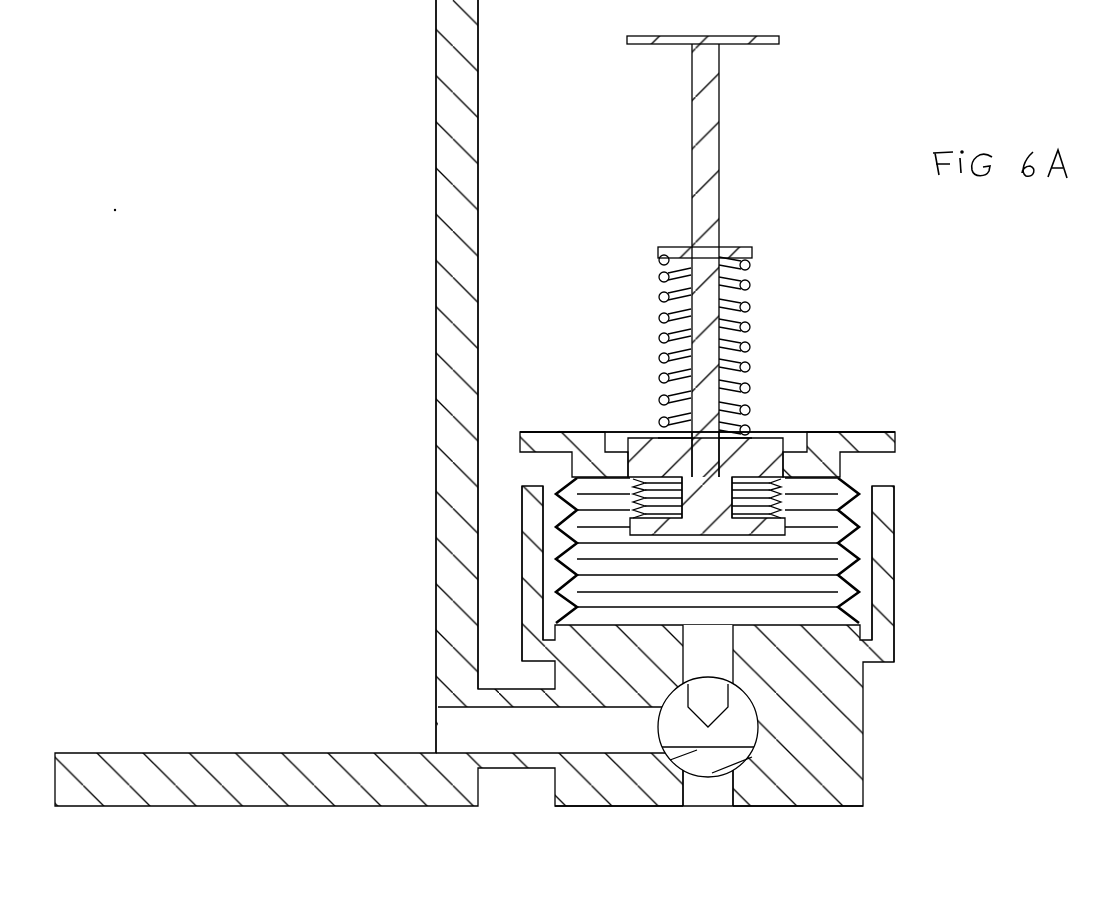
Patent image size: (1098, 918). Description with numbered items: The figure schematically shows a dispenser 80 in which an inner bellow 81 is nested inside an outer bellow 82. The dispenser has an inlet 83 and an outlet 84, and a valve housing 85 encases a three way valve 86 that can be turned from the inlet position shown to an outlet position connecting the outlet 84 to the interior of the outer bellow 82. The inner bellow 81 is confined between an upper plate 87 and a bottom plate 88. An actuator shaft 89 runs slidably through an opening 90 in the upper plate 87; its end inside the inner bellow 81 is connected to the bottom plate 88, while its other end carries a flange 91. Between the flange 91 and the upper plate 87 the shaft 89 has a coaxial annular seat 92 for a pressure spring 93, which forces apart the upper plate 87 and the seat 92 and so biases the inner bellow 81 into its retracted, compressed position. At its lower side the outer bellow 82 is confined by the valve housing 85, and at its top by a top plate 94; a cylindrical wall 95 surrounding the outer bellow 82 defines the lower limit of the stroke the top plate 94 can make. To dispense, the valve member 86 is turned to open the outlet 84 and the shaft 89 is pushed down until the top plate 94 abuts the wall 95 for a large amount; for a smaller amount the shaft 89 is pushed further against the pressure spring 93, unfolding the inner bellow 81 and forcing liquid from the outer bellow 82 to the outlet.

The dispenser 80 is at (872, 296).
The inner bellow 81 is at (748, 472).
The outer bellow 82 is at (833, 527).
The inlet 83 is at (413, 704).
The outlet 84 is at (691, 815).
The valve housing 85 is at (787, 738).
The three way valve 86 is at (747, 722).
The upper plate 87 is at (752, 452).
The bottom plate 88 is at (657, 527).
The actuator shaft 89 is at (715, 196).
The opening 90 is at (728, 424).
The flange 91 is at (762, 46).
The coaxial annular seat 92 is at (740, 247).
The pressure spring 93 is at (740, 290).
The top plate 94 is at (895, 432).
The cylindrical wall 95 is at (890, 554).